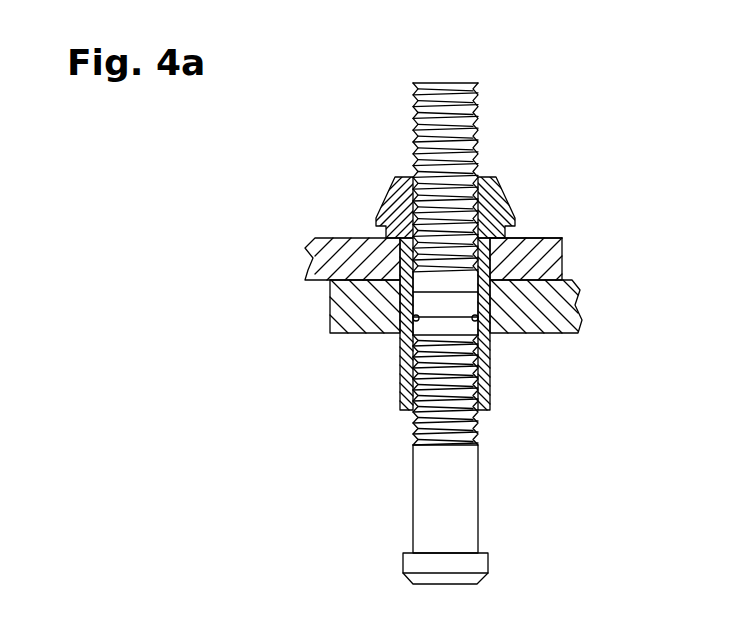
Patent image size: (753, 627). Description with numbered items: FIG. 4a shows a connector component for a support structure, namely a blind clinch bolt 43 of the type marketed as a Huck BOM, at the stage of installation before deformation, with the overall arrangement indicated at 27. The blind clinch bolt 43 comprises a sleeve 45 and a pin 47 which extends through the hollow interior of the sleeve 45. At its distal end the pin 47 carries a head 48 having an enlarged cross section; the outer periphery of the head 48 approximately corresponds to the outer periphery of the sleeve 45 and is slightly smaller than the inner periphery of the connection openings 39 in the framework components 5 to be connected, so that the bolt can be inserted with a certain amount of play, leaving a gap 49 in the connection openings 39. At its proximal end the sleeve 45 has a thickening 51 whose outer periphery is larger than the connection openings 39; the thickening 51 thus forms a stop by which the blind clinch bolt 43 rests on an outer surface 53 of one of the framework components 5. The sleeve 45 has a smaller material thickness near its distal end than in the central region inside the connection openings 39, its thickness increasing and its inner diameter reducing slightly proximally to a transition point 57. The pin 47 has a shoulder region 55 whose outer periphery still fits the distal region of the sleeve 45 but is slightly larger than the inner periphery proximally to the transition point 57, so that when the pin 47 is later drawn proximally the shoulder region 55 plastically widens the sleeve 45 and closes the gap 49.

The framework component 5 is at (343, 250).
The fastening arrangement 27 is at (514, 498).
The connection opening 39 is at (535, 250).
The blind clinch bolt 43 is at (356, 395).
The sleeve 45 is at (492, 395).
The pin 47 is at (413, 510).
The head 48 is at (412, 560).
The gap 49 is at (399, 318).
The thickening 51 is at (505, 197).
The outer surface 53 is at (530, 242).
The shoulder region 55 is at (403, 338).
The transition point 57 is at (493, 340).